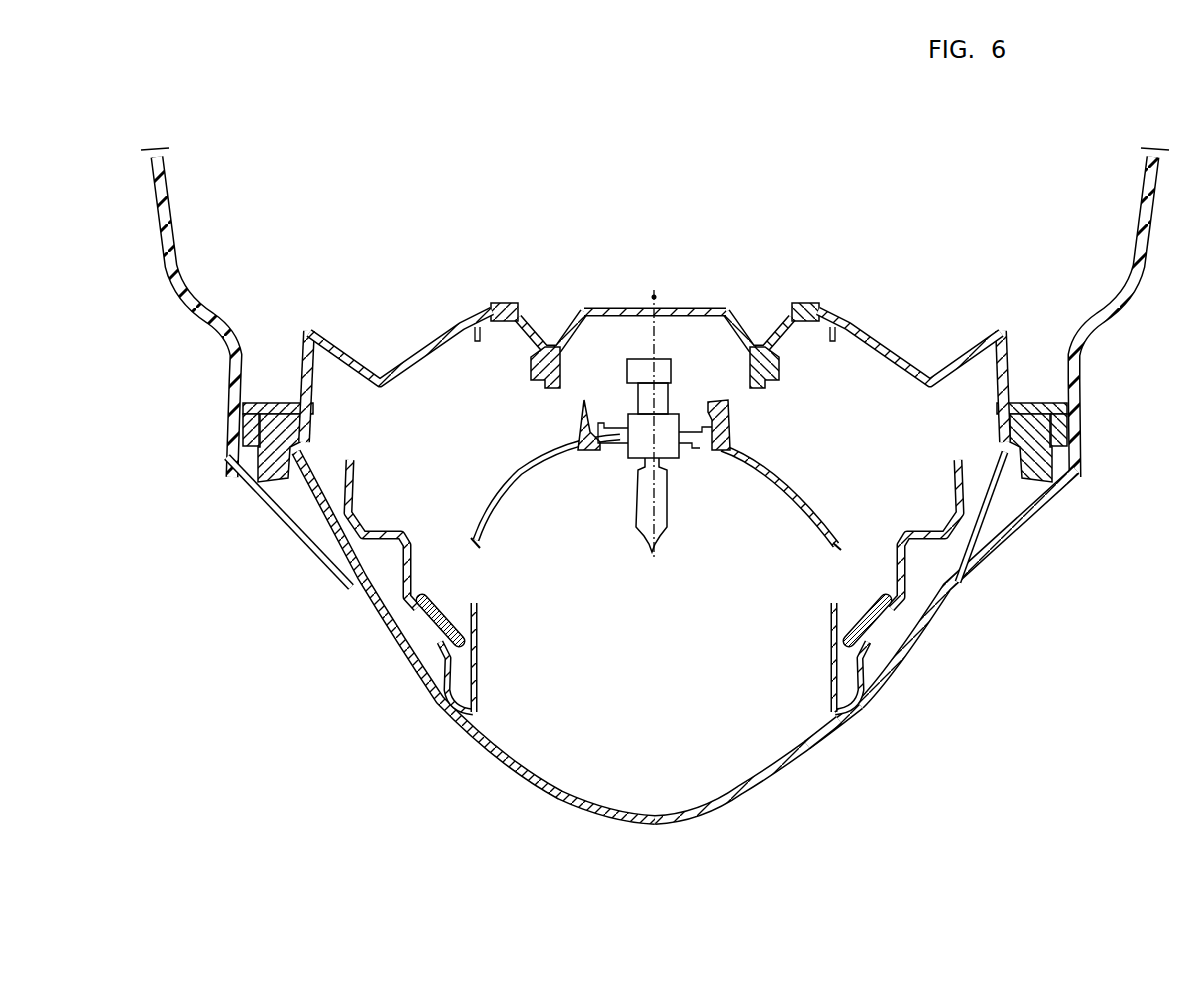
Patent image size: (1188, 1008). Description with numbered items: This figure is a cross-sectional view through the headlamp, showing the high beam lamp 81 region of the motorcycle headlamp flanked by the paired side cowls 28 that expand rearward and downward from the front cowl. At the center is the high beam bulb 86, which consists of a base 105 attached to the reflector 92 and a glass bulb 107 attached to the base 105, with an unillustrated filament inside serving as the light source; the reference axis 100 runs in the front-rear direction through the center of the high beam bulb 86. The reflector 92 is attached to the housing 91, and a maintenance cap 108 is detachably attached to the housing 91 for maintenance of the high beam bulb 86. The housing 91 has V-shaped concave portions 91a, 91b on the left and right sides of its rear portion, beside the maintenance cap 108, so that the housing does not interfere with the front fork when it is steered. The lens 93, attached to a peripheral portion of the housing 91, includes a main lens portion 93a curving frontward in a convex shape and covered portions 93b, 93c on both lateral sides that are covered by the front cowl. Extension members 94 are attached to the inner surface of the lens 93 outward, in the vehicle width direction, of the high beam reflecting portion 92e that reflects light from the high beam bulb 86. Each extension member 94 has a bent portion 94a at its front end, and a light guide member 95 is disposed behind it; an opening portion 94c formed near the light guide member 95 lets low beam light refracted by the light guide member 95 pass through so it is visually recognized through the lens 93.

The side cowl 28 is at (229, 378).
The high beam lamp 81 is at (816, 791).
The high beam bulb 86 is at (620, 357).
The housing 91 is at (304, 317).
The V-shaped concave portion 91a is at (930, 385).
The V-shaped concave portion 91b is at (380, 378).
The reflector 92 is at (546, 442).
The high beam reflecting portion 92e is at (790, 475).
The lens 93 is at (574, 820).
The main lens portion 93a is at (727, 808).
The covered portion 93b is at (993, 502).
The covered portion 93c is at (305, 510).
The extension member 94 is at (392, 586).
The bent portion 94a is at (445, 710).
The opening portion 94c is at (425, 628).
The light guide member 95 is at (417, 609).
The reference axis 100 is at (654, 294).
The base 105 is at (670, 425).
The glass bulb 107 is at (663, 500).
The maintenance cap 108 is at (634, 308).